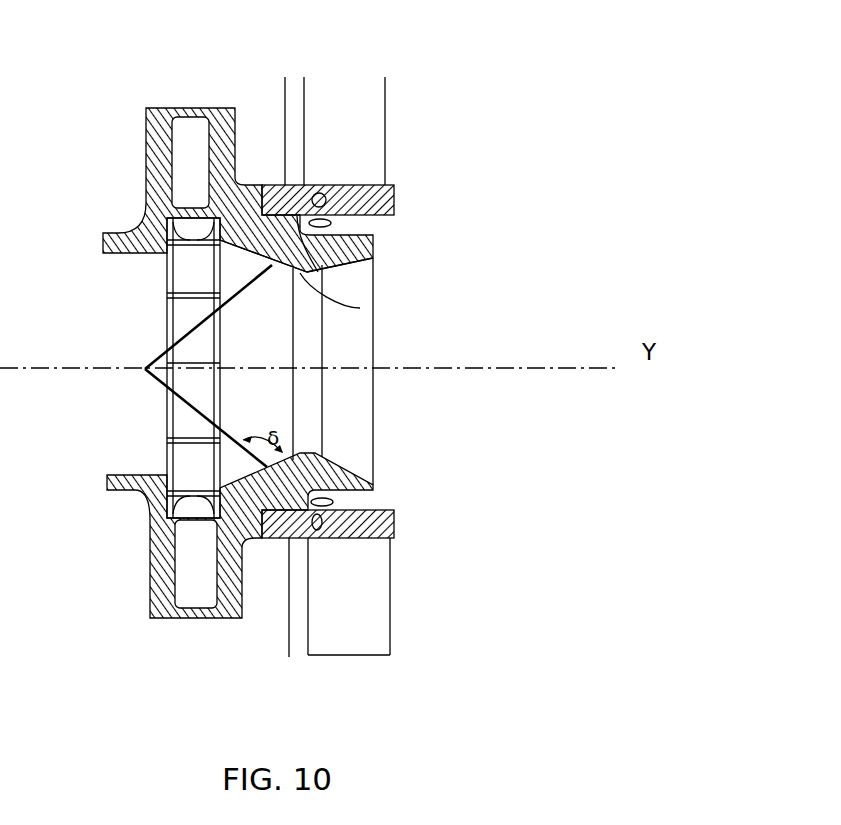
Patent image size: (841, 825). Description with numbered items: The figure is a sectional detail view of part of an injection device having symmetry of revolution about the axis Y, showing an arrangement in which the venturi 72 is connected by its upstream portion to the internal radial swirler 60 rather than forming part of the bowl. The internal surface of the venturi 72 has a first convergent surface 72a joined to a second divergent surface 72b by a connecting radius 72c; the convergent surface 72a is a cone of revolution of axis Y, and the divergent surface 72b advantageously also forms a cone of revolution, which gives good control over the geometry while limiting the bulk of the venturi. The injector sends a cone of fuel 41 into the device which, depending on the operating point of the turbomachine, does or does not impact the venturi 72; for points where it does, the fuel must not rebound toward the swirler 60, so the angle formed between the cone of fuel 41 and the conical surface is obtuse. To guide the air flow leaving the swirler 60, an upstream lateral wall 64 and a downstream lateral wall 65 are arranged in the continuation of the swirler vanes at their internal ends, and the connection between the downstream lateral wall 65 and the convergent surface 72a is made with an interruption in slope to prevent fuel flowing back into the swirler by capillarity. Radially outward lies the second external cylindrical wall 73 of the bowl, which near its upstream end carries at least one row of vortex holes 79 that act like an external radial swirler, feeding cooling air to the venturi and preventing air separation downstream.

The internal radial swirler 60 is at (185, 90).
The cone of fuel 41 is at (170, 433).
The upstream lateral wall 64 is at (178, 226).
The downstream lateral wall 65 is at (190, 297).
The venturi 72 is at (296, 214).
The first convergent surface 72a is at (248, 246).
The second divergent surface 72b is at (342, 256).
The connecting radius 72c is at (360, 308).
The second external cylindrical wall 73 is at (353, 538).
The vortex holes 79 is at (322, 538).